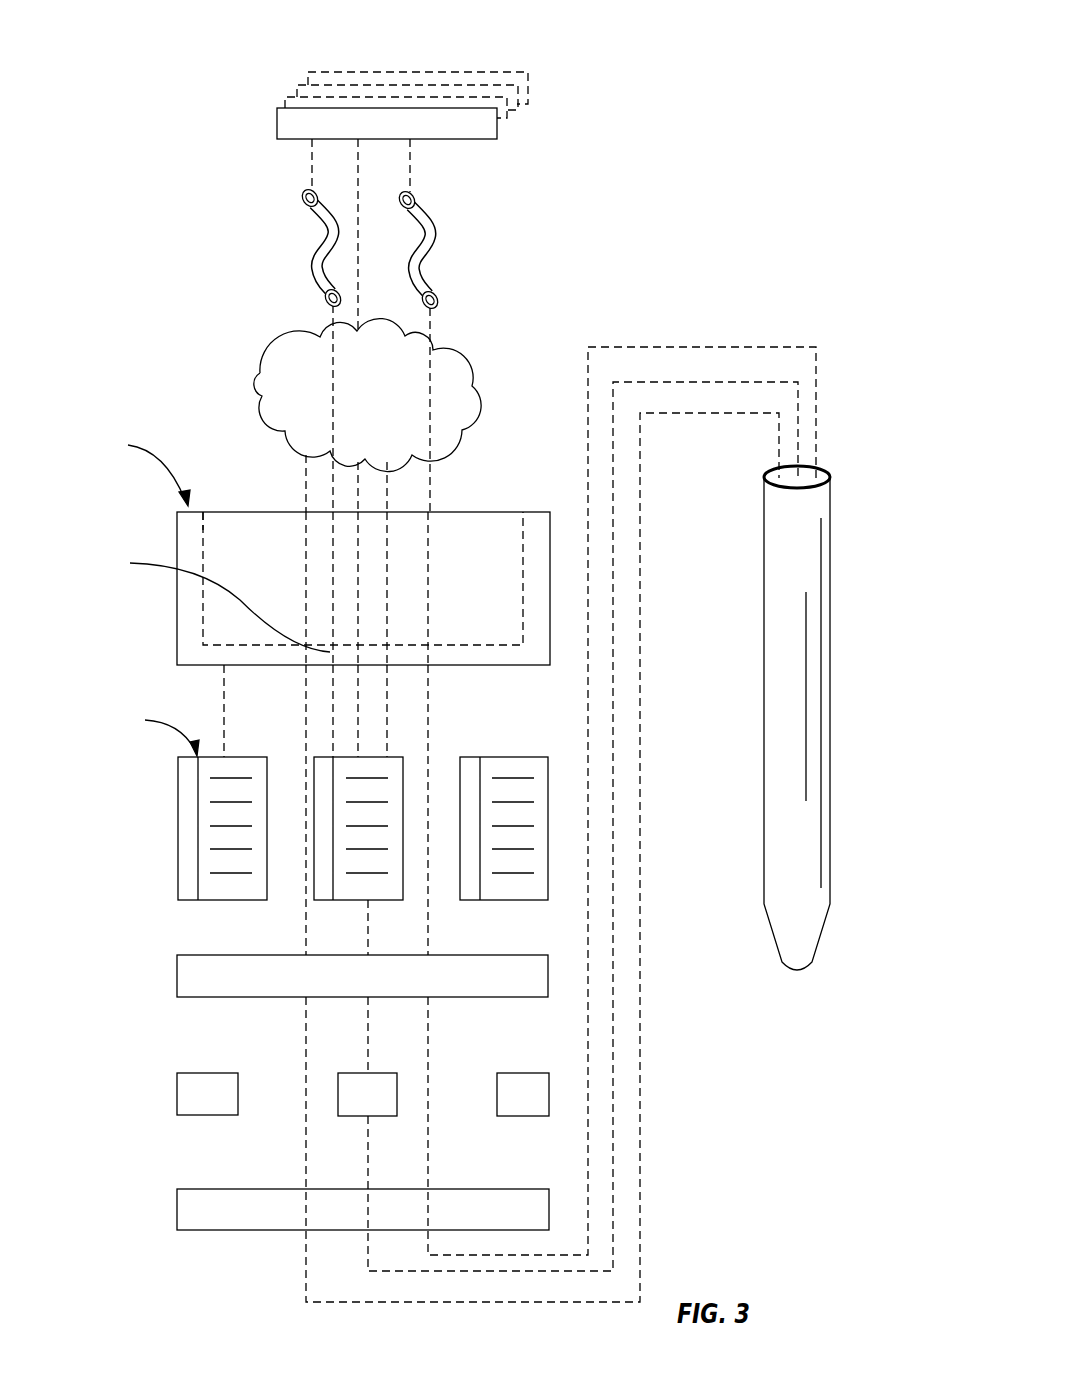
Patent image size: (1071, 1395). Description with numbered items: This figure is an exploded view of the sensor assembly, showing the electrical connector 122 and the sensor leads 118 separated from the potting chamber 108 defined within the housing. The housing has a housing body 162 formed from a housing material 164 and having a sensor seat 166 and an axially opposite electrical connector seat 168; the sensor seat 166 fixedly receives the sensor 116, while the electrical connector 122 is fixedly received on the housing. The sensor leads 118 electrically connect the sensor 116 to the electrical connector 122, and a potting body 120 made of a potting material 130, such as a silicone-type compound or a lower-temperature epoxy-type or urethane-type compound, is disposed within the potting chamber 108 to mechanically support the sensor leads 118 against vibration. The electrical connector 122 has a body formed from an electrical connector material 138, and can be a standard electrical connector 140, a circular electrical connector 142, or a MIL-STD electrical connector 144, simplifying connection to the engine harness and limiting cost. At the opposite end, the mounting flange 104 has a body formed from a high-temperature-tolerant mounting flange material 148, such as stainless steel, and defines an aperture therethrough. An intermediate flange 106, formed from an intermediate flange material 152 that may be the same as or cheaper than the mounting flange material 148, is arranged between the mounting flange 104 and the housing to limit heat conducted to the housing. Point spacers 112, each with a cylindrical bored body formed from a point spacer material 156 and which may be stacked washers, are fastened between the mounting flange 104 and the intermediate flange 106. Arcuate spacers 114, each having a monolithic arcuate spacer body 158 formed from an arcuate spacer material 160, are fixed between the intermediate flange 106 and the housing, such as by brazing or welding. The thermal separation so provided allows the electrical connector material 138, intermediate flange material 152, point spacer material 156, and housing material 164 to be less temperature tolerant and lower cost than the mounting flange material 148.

The mounting flange 104 is at (185, 1208).
The intermediate flange 106 is at (190, 975).
The potting chamber 108 is at (521, 556).
The point spacers 112 is at (185, 1092).
The arcuate spacers 114 is at (188, 823).
The sensor 116 is at (778, 858).
The sensor leads 118 is at (325, 244).
The potting body 120 is at (257, 378).
The electrical connector 122 is at (277, 123).
The potting material 130 is at (375, 392).
The electrical connector material 138 is at (465, 138).
The standard electrical connector 140 is at (500, 128).
The circular electrical connector 142 is at (303, 83).
The MIL-STD electrical connector 144 is at (332, 70).
The mounting flange material 148 is at (220, 1222).
The intermediate flange material 152 is at (215, 962).
The point spacer material 156 is at (207, 1103).
The arcuate spacer body 158 is at (153, 732).
The arcuate spacer material 160 is at (180, 775).
The housing body 162 is at (190, 604).
The housing material 164 is at (193, 660).
The sensor seat 166 is at (211, 601).
The electrical connector seat 168 is at (197, 512).